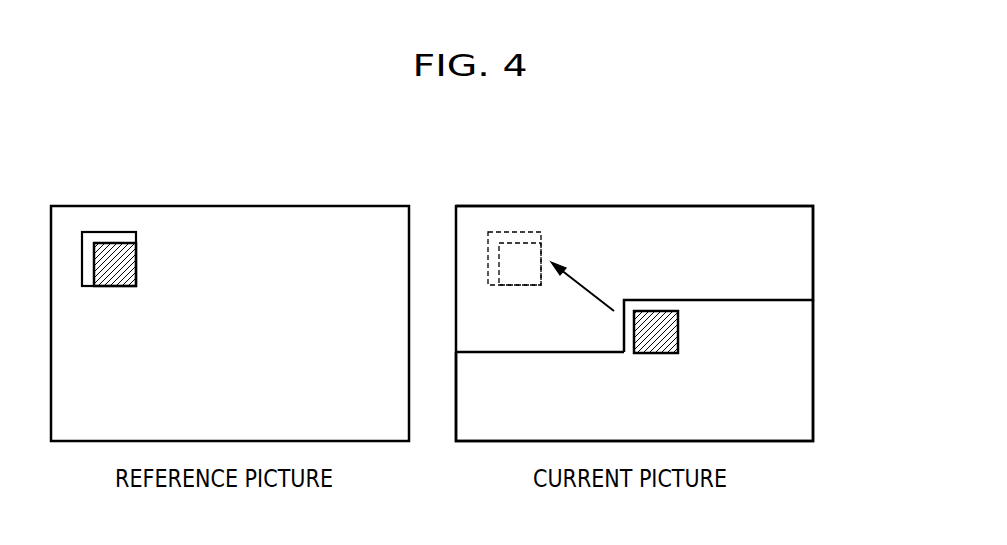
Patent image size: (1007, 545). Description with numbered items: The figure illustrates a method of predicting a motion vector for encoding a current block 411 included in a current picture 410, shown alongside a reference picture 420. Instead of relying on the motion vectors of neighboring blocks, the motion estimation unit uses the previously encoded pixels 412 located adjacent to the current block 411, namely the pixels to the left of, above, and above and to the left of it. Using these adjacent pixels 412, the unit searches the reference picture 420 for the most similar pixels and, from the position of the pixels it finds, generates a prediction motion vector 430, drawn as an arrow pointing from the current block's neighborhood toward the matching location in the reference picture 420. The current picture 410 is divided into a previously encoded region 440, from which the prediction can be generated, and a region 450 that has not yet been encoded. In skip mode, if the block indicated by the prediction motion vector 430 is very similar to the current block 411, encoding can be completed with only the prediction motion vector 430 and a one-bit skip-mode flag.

The current picture 410 is at (652, 206).
The current block 411 is at (660, 354).
The adjacent pixels 412 is at (660, 300).
The reference picture 420 is at (246, 206).
The prediction motion vector 430 is at (588, 283).
The encoded region of current picture 440 is at (814, 252).
The region not yet encoded 450 is at (814, 378).